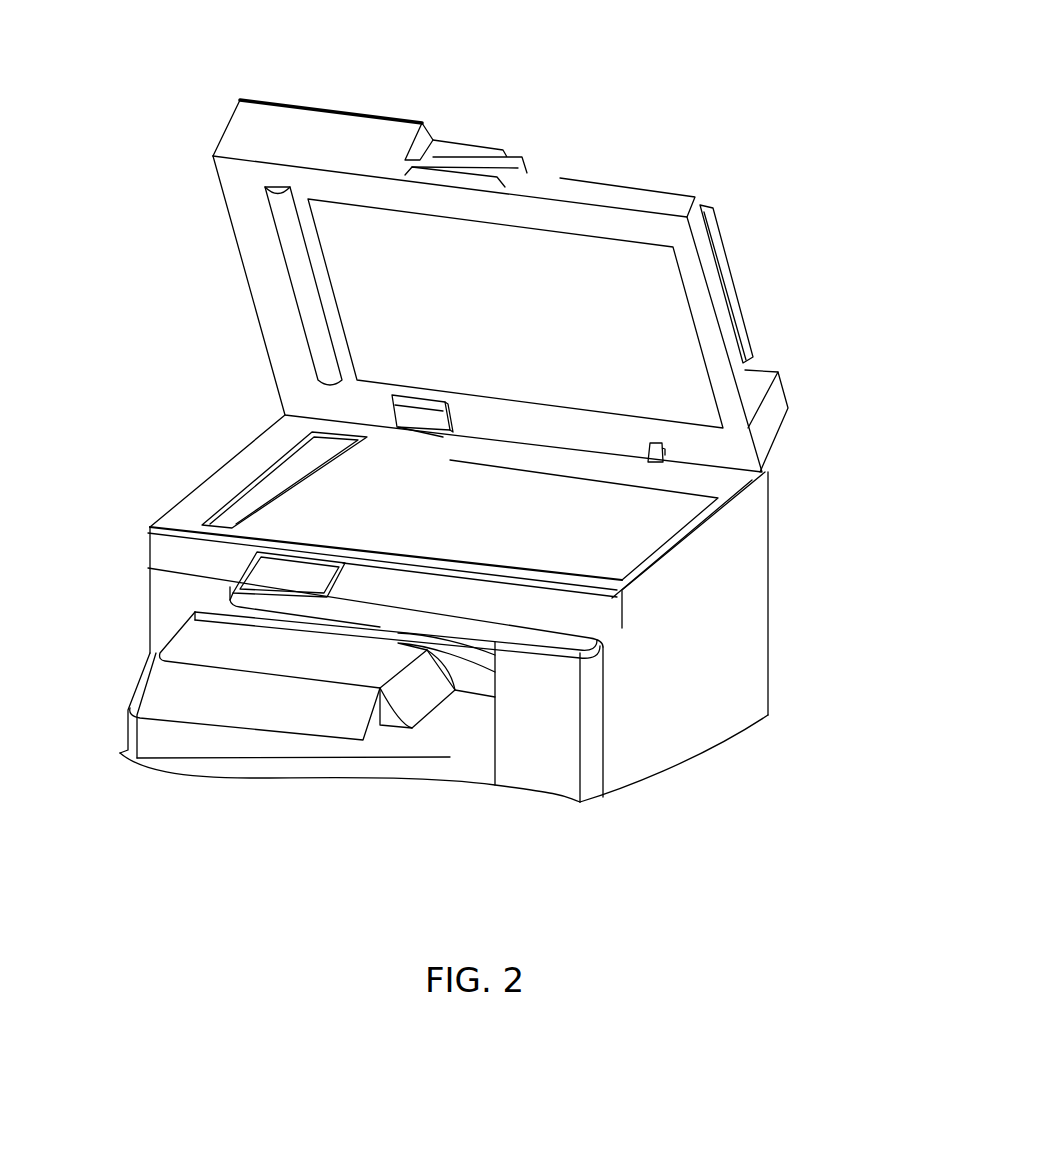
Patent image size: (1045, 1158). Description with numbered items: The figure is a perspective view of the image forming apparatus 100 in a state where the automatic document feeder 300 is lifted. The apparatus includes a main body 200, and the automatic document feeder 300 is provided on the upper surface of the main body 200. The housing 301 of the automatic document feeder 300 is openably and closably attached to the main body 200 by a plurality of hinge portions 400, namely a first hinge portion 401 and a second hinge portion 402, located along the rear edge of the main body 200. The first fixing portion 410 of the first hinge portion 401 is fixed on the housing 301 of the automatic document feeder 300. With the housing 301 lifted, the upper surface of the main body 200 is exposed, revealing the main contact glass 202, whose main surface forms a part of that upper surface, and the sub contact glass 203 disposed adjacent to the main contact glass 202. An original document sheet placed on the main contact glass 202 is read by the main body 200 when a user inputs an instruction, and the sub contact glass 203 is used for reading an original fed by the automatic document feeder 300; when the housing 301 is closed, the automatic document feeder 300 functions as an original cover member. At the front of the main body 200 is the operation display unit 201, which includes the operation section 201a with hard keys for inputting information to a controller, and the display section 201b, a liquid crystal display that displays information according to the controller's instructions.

The image forming apparatus 100 is at (686, 81).
The automatic document feeder 300 is at (322, 90).
The housing 301 is at (240, 130).
The hinge portions 400 is at (502, 413).
The first hinge portion 401 is at (388, 402).
The second hinge portion 402 is at (665, 450).
The first fixing portion 410 is at (410, 412).
The main body 200 is at (735, 607).
The operation display unit 201 is at (605, 635).
The operation section 201a is at (565, 613).
The display section 201b is at (265, 570).
The main contact glass 202 is at (660, 522).
The sub contact glass 203 is at (218, 520).